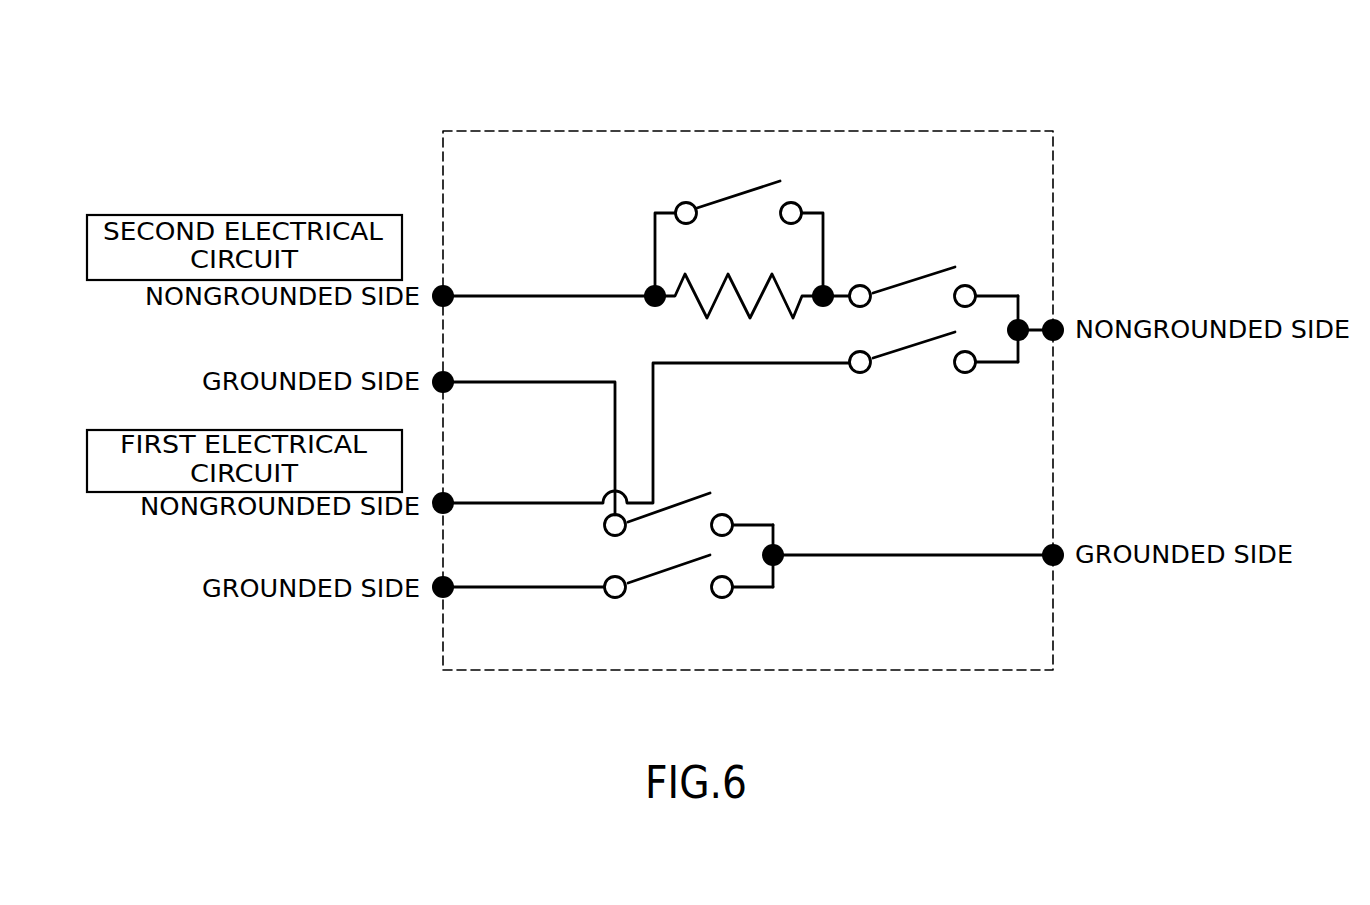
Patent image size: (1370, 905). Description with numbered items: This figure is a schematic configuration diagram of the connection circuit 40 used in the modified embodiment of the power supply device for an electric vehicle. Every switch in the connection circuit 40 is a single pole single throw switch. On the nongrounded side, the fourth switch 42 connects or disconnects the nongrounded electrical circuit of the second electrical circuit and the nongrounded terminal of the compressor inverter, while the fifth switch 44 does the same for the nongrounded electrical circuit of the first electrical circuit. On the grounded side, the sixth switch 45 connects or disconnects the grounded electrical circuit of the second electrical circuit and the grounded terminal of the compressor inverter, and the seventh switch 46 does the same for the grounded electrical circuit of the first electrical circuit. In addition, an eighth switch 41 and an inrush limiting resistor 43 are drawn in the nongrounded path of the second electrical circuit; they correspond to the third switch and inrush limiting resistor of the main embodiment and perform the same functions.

The connection circuit 40 is at (628, 128).
The eighth switch 41 is at (743, 193).
The fourth switch 42 is at (917, 275).
The inrush limiting resistor 43 is at (702, 308).
The fifth switch 44 is at (922, 347).
The sixth switch 45 is at (693, 497).
The seventh switch 46 is at (690, 567).